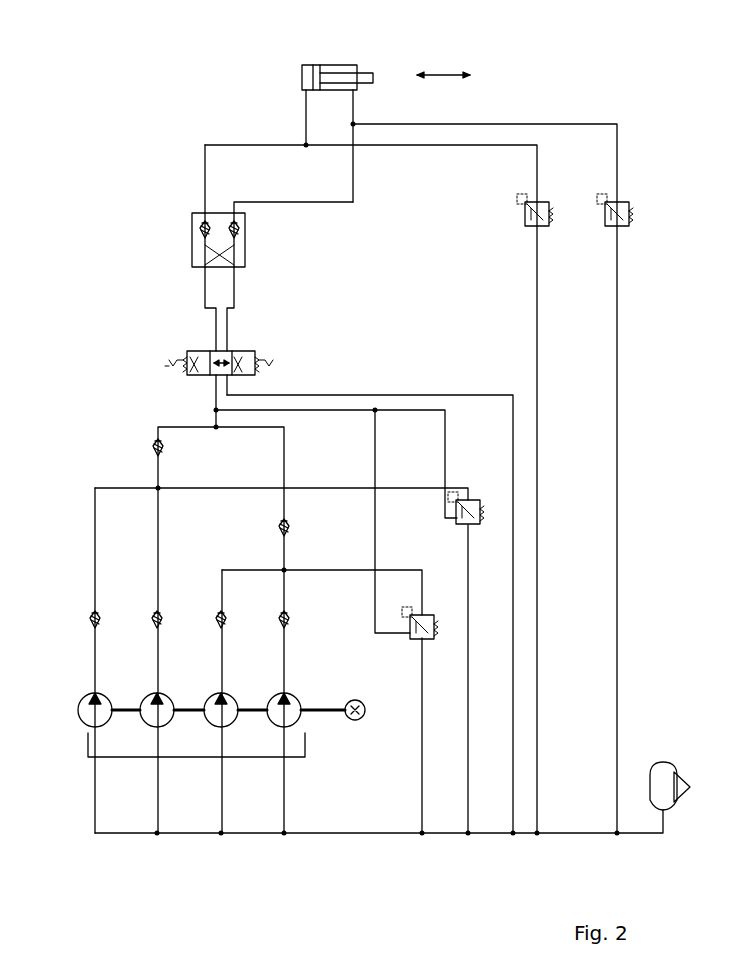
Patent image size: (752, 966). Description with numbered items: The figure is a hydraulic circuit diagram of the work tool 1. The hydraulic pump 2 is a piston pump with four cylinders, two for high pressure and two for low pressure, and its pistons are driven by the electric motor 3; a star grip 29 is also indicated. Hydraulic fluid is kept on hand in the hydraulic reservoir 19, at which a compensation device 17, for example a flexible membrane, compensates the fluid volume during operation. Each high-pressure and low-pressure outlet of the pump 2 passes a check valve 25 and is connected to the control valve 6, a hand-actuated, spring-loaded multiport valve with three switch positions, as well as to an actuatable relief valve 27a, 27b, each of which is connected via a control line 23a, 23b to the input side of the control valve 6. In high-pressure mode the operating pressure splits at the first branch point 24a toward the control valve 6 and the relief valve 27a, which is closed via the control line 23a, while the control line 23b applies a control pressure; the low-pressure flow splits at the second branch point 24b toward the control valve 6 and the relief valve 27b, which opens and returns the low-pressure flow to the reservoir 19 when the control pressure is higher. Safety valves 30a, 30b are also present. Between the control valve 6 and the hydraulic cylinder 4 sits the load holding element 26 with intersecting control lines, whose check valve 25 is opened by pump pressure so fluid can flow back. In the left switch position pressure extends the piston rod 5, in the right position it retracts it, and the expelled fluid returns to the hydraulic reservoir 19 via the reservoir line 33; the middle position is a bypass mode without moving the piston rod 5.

The work tool 1 is at (298, 44).
The hydraulic pump 2 is at (195, 757).
The electric motor 3 is at (357, 720).
The hydraulic cylinder 4 is at (338, 65).
The piston rod 5 is at (370, 74).
The control valve 6 is at (197, 351).
The compensation device 17 is at (692, 787).
The hydraulic reservoir 19 is at (660, 772).
The control line 23a is at (432, 410).
The control line 23b is at (373, 545).
The first branch point 24a is at (155, 487).
The second branch point 24b is at (280, 569).
The check valve 25 is at (202, 232).
The load holding element 26 is at (192, 252).
The relief valve 27a is at (472, 505).
The relief valve 27b is at (415, 640).
The star grip 29 is at (451, 833).
The safety valve 30a is at (530, 222).
The safety valve 30b is at (625, 214).
The reservoir line 33 is at (375, 394).